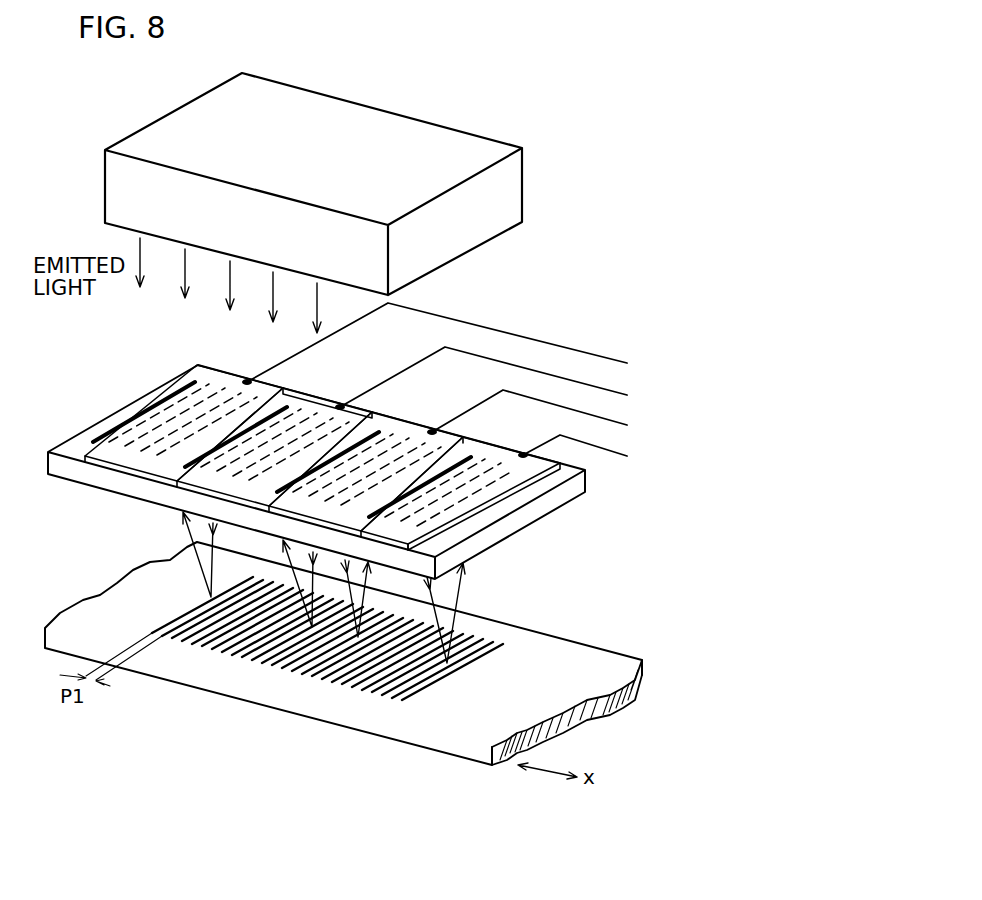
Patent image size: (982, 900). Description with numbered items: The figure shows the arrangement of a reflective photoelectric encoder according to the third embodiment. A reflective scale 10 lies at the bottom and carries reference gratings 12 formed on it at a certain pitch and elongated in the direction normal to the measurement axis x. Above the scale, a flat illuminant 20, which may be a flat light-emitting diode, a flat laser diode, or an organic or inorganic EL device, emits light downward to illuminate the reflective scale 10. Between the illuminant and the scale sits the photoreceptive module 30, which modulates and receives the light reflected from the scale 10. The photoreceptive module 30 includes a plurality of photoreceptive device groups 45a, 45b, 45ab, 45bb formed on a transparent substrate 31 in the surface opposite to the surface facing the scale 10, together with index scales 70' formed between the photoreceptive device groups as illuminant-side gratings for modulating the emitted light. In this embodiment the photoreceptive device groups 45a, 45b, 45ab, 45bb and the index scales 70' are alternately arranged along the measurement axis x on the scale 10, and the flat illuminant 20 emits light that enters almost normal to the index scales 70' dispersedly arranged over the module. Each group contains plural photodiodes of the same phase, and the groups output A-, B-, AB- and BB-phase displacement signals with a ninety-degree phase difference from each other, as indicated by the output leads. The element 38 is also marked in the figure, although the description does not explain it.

The reflective scale 10 is at (365, 728).
The reference gratings 12 is at (493, 647).
The flat illuminant 20 is at (506, 195).
The photoreceptive module 30 is at (580, 528).
The transparent substrate 31 is at (520, 517).
The photodiode base portion 38 is at (423, 520).
The photoreceptive device group 45a is at (192, 405).
The photoreceptive device group 45b is at (308, 417).
The photoreceptive device group 45ab is at (403, 447).
The photoreceptive device group 45bb is at (500, 468).
The index scales 70' is at (310, 427).